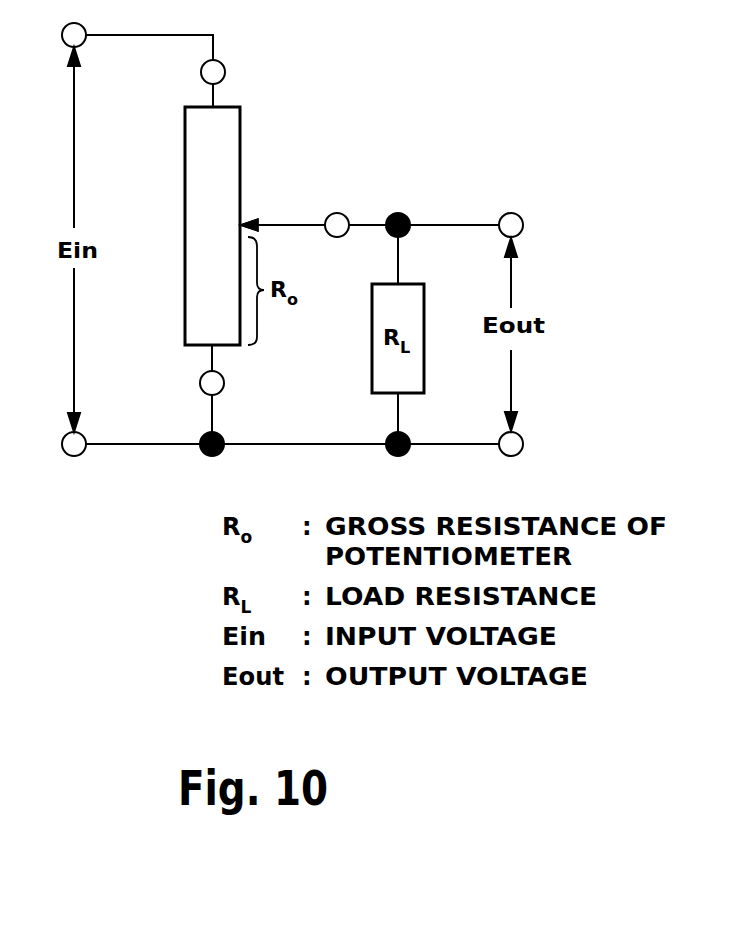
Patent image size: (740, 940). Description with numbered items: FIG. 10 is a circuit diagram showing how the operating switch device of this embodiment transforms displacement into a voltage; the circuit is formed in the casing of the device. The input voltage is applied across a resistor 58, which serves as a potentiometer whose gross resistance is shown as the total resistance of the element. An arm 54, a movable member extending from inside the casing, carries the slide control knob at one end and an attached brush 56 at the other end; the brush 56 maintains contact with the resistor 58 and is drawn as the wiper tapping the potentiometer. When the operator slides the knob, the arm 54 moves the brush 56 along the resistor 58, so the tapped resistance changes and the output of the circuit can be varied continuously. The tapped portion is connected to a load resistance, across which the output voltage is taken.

The resistor 58 is at (225, 130).
The arm 54 is at (273, 224).
The brush 56 is at (273, 224).